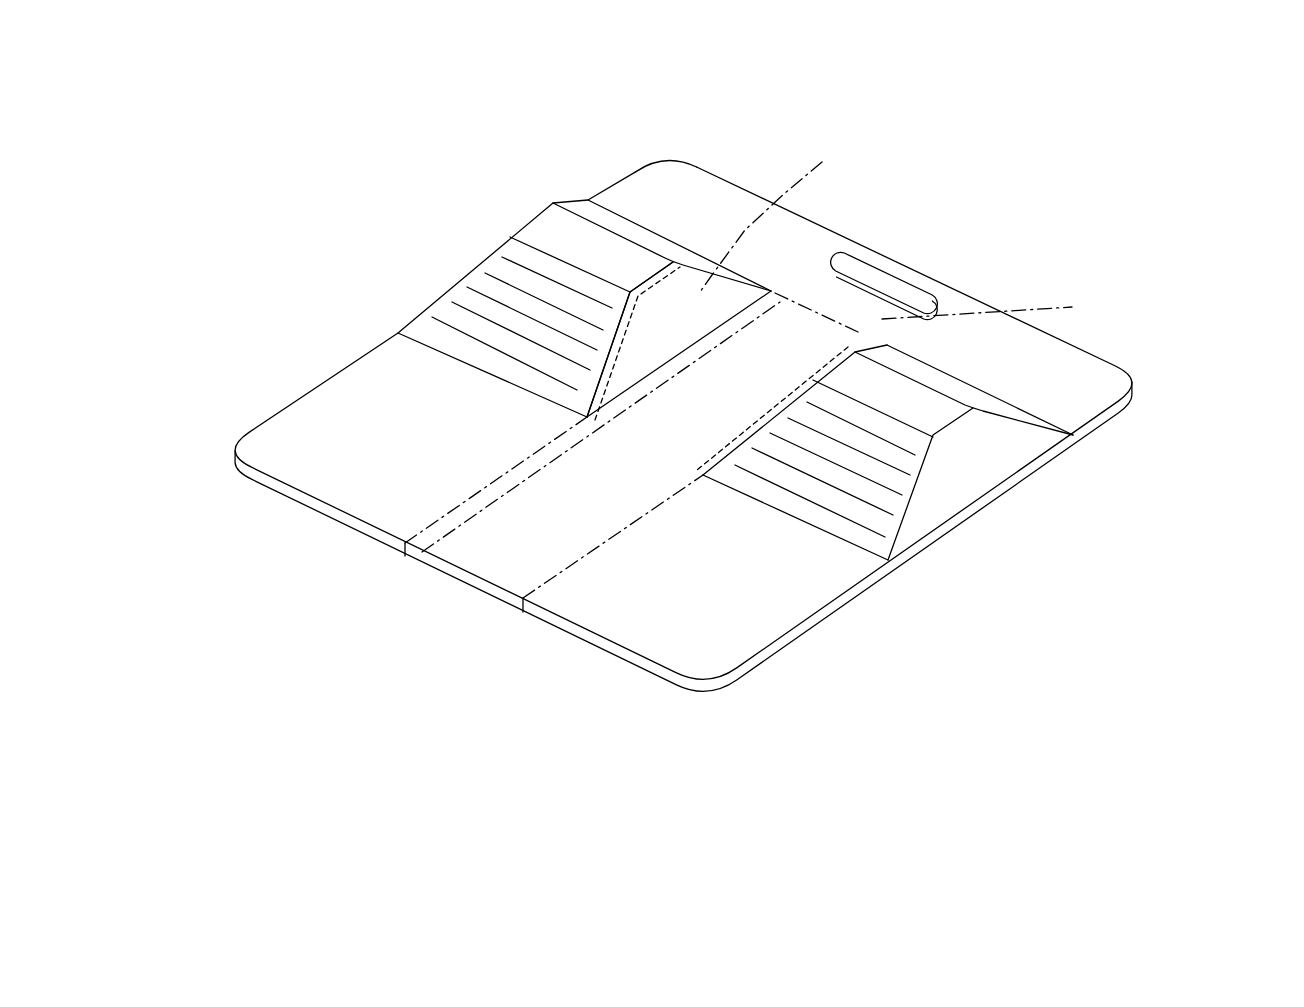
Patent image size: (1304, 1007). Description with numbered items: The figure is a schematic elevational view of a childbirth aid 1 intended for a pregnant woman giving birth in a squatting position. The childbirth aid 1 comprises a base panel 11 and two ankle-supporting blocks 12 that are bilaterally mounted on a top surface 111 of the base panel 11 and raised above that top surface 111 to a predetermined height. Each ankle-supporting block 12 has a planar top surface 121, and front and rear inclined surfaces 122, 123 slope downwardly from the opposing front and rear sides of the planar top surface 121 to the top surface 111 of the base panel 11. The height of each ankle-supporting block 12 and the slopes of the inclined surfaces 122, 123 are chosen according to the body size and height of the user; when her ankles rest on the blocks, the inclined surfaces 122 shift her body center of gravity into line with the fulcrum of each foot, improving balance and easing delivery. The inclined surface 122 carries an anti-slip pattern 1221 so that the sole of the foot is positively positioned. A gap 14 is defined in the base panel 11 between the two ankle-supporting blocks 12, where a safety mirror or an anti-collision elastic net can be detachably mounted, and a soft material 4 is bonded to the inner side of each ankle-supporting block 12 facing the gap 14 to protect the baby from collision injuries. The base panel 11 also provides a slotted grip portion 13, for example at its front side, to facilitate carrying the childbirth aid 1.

The childbirth aid 1 is at (740, 132).
The base panel 11 is at (817, 223).
The top surface 111 is at (676, 177).
The ankle-supporting block 12 is at (565, 198).
The planar top surface 121 is at (540, 234).
The inclined surface 122 is at (463, 297).
The anti-slip pattern 1221 is at (507, 308).
The rear inclined surface 123 is at (613, 222).
The slotted grip portion 13 is at (900, 285).
The gap 14 is at (537, 568).
The soft material 4 is at (759, 347).